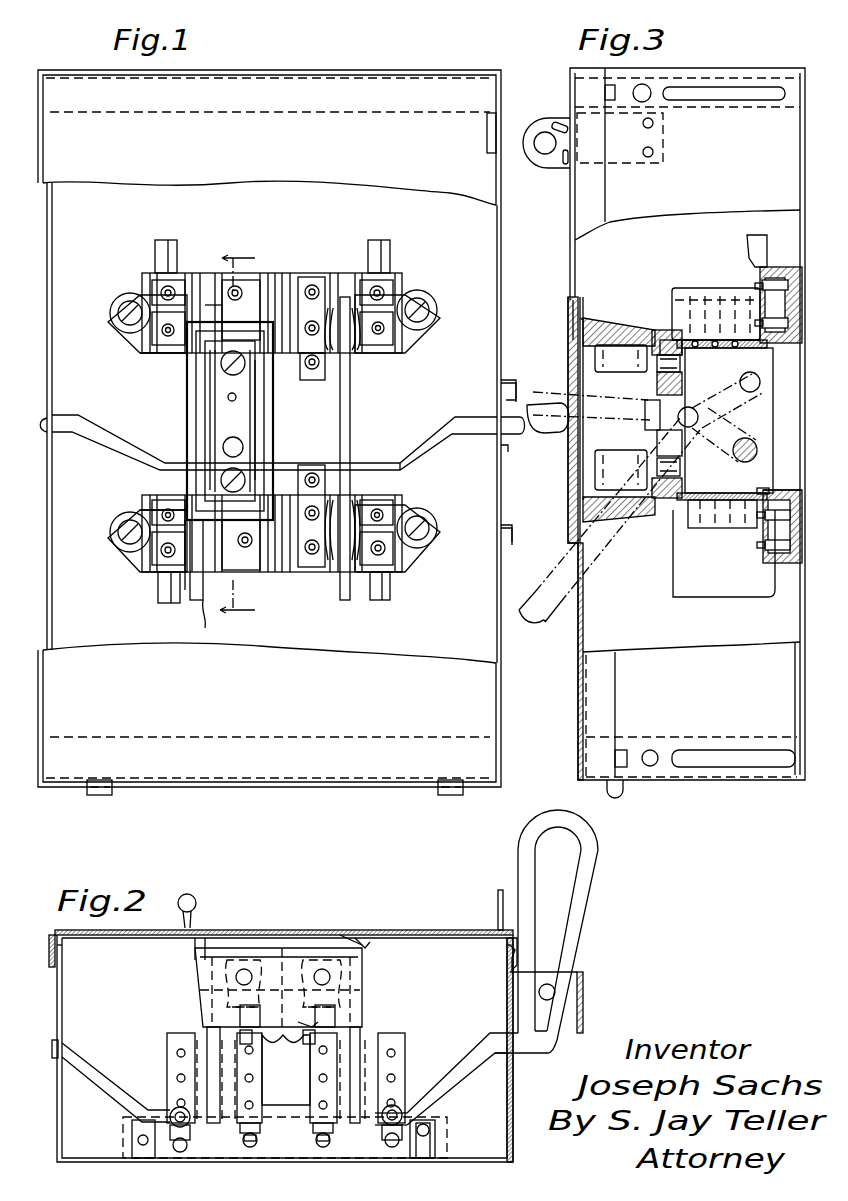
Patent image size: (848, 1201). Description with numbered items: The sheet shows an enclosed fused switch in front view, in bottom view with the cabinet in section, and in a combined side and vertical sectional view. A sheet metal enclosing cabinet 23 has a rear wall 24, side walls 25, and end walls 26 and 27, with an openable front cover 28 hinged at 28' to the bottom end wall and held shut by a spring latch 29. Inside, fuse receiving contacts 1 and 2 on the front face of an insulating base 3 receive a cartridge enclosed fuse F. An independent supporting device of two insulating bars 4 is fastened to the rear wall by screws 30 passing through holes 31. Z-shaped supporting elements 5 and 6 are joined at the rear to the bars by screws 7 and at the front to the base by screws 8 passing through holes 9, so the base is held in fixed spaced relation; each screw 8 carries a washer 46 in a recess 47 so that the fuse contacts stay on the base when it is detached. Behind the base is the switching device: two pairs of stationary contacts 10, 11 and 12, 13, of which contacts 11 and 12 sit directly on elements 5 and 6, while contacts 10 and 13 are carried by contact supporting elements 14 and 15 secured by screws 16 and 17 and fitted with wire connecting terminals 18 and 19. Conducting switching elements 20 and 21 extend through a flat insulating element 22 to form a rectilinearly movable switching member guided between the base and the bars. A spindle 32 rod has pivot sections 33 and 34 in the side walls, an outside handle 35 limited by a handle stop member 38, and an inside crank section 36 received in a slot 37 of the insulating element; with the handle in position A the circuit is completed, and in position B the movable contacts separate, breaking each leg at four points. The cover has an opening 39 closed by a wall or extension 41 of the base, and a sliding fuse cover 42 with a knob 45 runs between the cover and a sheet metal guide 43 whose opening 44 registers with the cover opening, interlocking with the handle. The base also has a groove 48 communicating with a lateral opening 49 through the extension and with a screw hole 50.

In FIG. 1, the fuse receiving contact 1 is at (256, 455).
In FIG. 3, the fuse receiving contact 1 is at (610, 452).
In FIG. 2, the fuse receiving contact 1 is at (244, 976).
In FIG. 1, the fuse receiving contact 2 is at (252, 395).
In FIG. 3, the fuse receiving contact 2 is at (616, 364).
In FIG. 1, the insulating base 3 is at (160, 394).
In FIG. 3, the insulating base 3 is at (606, 320).
In FIG. 2, the insulating base 3 is at (195, 966).
In FIG. 1, the supporting device bars 4 is at (396, 300).
In FIG. 3, the supporting device bars 4 is at (792, 268).
In FIG. 2, the supporting device bars 4 is at (120, 1156).
In FIG. 1, the supporting element 5 is at (302, 474).
In FIG. 3, the supporting element 5 is at (762, 490).
In FIG. 2, the supporting element 5 is at (258, 1062).
In FIG. 1, the supporting element 6 is at (303, 380).
In FIG. 3, the supporting element 6 is at (752, 348).
In FIG. 1, the screws 7 is at (238, 285).
In FIG. 3, the screws 7 is at (760, 284).
In FIG. 2, the screws 7 is at (256, 1140).
In FIG. 3, the screws 8 is at (652, 364).
In FIG. 2, the screws 8 is at (322, 988).
In FIG. 3, the holes 9 is at (665, 330).
In FIG. 1, the stationary switch contact 10 is at (188, 580).
In FIG. 2, the stationary switch contact 10 is at (205, 1045).
In FIG. 1, the stationary switch contact 11 is at (246, 541).
In FIG. 3, the stationary switch contact 11 is at (710, 530).
In FIG. 2, the stationary switch contact 11 is at (281, 1080).
In FIG. 1, the stationary switch contact 12 is at (218, 305).
In FIG. 3, the stationary switch contact 12 is at (708, 312).
In FIG. 1, the stationary switch contact 13 is at (174, 275).
In FIG. 1, the contact supporting element 14 is at (160, 502).
In FIG. 2, the contact supporting element 14 is at (172, 1067).
In FIG. 1, the contact supporting element 15 is at (152, 346).
In FIG. 1, the screws 16 is at (162, 332).
In FIG. 1, the screws 17 is at (160, 292).
In FIG. 2, the screws 17 is at (188, 1148).
In FIG. 1, the wire connecting terminal 18 is at (166, 602).
In FIG. 2, the wire connecting terminal 18 is at (175, 1112).
In FIG. 1, the wire connecting terminal 19 is at (160, 252).
In FIG. 3, the wire connecting terminal 19 is at (757, 244).
In FIG. 2, the wire connecting terminal 19 is at (287, 1010).
In FIG. 1, the conducting switching element 20 is at (202, 572).
In FIG. 3, the conducting switching element 20 is at (738, 492).
In FIG. 2, the conducting switching element 20 is at (206, 1036).
In FIG. 1, the conducting switching element 21 is at (216, 285).
In FIG. 3, the conducting switching element 21 is at (740, 312).
In FIG. 1, the insulating element 22 is at (206, 616).
In FIG. 3, the insulating element 22 is at (680, 586).
In FIG. 1, the enclosing cabinet 23 is at (498, 268).
In FIG. 3, the enclosing cabinet 23 is at (672, 780).
In FIG. 2, the enclosing cabinet 23 is at (64, 1020).
In FIG. 3, the rear wall 24 is at (805, 645).
In FIG. 2, the rear wall 24 is at (498, 1150).
In FIG. 1, the side walls 25 is at (52, 228).
In FIG. 3, the side walls 25 is at (539, 313).
In FIG. 2, the side walls 25 is at (505, 1008).
In FIG. 1, the end wall 26 is at (396, 80).
In FIG. 3, the end wall 26 is at (716, 74).
In FIG. 1, the end wall 27 is at (316, 778).
In FIG. 3, the end wall 27 is at (740, 776).
In FIG. 1, the front cover 28 is at (269, 706).
In FIG. 3, the front cover 28 is at (691, 678).
In FIG. 2, the front cover 28 is at (84, 954).
In FIG. 1, the hinge 28' is at (275, 797).
In FIG. 3, the hinge 28' is at (619, 796).
In FIG. 1, the spring latch 29 is at (487, 136).
In FIG. 3, the spring latch 29 is at (546, 128).
In FIG. 2, the spring latch 29 is at (498, 900).
In FIG. 1, the screws 30 is at (118, 310).
In FIG. 2, the screws 30 is at (132, 1128).
In FIG. 2, the holes 31 is at (440, 1152).
In FIG. 1, the spindle 32 is at (400, 450).
In FIG. 2, the spindle 32 is at (472, 1060).
In FIG. 1, the pivot section 33 is at (500, 418).
In FIG. 2, the pivot section 33 is at (500, 1060).
In FIG. 1, the pivot section 34 is at (53, 416).
In FIG. 2, the pivot section 34 is at (60, 1046).
In FIG. 1, the handle 35 is at (516, 378).
In FIG. 3, the handle 35 is at (515, 375).
In FIG. 2, the handle 35 is at (594, 914).
In FIG. 1, the crank section 36 is at (384, 456).
In FIG. 3, the crank section 36 is at (758, 450).
In FIG. 2, the crank section 36 is at (406, 1106).
In FIG. 3, the slot 37 is at (790, 490).
In FIG. 1, the handle stop member 38 is at (512, 532).
In FIG. 3, the handle stop member 38 is at (519, 537).
In FIG. 2, the handle stop member 38 is at (583, 1006).
In FIG. 2, the opening 39 is at (368, 940).
In FIG. 3, the wall or extension 41 is at (572, 490).
In FIG. 2, the wall or extension 41 is at (207, 948).
In FIG. 3, the fuse cover 42 is at (567, 466).
In FIG. 2, the fuse cover 42 is at (310, 934).
In FIG. 3, the sheet metal guide 43 is at (556, 318).
In FIG. 2, the sheet metal guide 43 is at (418, 928).
In FIG. 2, the opening 44 is at (356, 928).
In FIG. 1, the knob 45 is at (516, 441).
In FIG. 3, the knob 45 is at (540, 424).
In FIG. 2, the knob 45 is at (192, 900).
In FIG. 3, the washer 46 is at (664, 330).
In FIG. 2, the washer 46 is at (305, 1046).
In FIG. 3, the recess 47 is at (670, 510).
In FIG. 2, the recess 47 is at (254, 1038).
In FIG. 1, the groove 48 is at (234, 405).
In FIG. 1, the lateral opening 49 is at (200, 418).
In FIG. 3, the lateral opening 49 is at (648, 418).
In FIG. 2, the lateral opening 49 is at (200, 990).
In FIG. 1, the screw hole 50 is at (228, 397).
In FIG. 3, the screw hole 50 is at (684, 394).
In FIG. 3, the uppermost handle position A is at (540, 392).
In FIG. 3, the lowermost handle position B is at (609, 530).
In FIG. 1, the cartridge enclosed fuse F is at (262, 415).
In FIG. 2, the cartridge enclosed fuse F is at (284, 983).